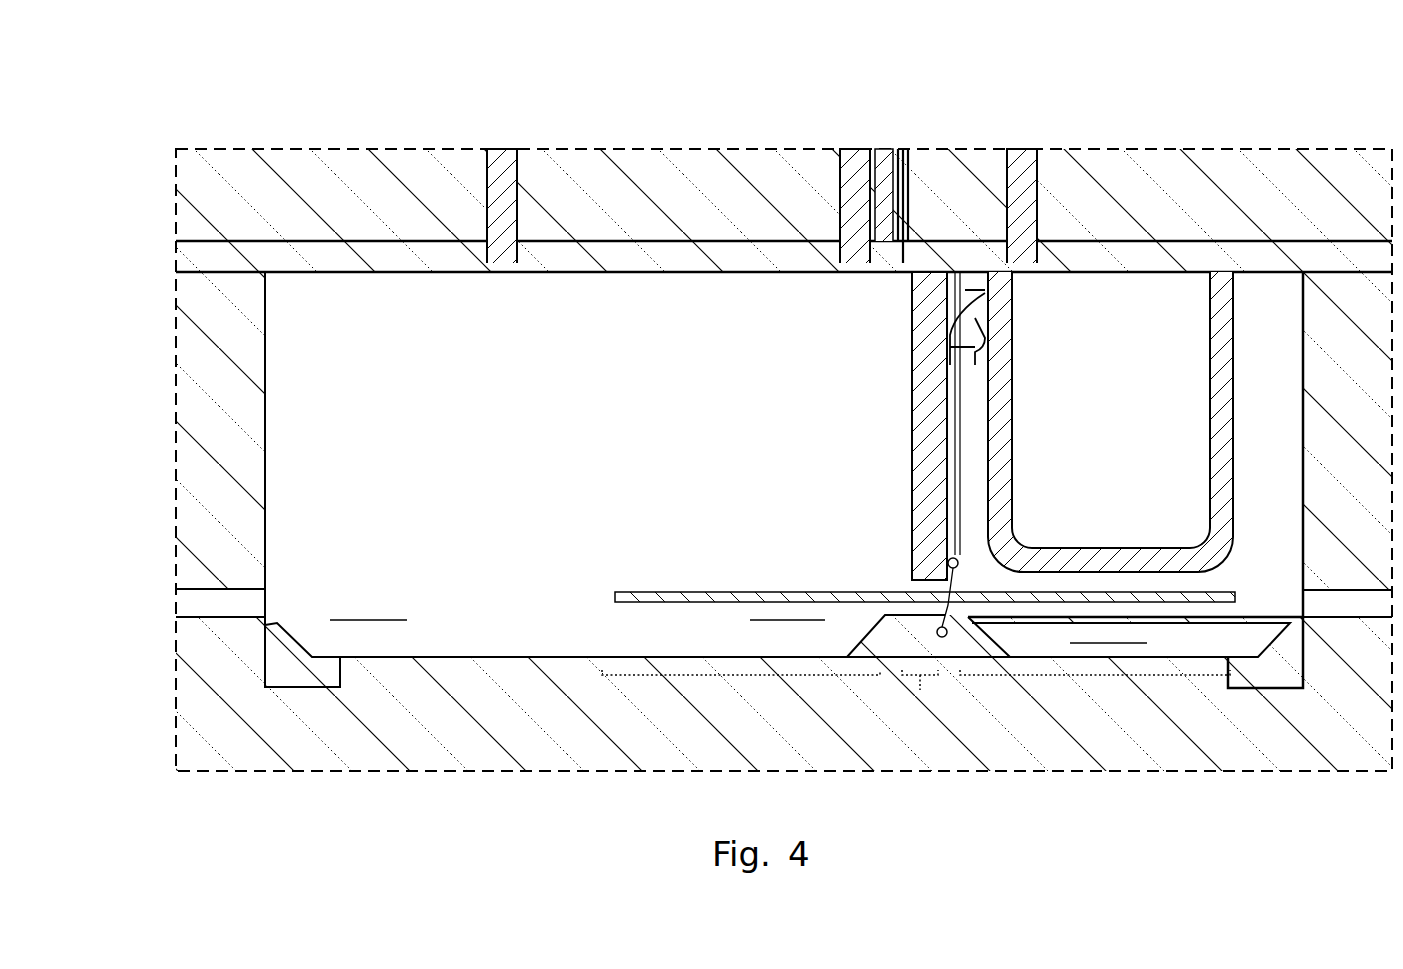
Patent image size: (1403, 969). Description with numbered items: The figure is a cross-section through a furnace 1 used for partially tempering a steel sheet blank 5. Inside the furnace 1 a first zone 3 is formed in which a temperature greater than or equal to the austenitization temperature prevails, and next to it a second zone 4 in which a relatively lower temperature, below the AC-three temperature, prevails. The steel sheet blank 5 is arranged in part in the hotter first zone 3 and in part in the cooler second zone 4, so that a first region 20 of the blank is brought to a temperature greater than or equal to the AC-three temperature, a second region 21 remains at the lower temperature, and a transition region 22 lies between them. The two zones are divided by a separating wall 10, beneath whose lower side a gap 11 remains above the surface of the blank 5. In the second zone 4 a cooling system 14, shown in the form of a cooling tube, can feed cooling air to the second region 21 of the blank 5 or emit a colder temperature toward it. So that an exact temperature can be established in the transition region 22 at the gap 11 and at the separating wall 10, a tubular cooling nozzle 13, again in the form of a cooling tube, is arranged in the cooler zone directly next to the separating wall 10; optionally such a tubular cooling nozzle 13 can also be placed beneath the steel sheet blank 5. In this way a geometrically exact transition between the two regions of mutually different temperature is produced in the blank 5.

The furnace 1 is at (230, 96).
The first zone 3 is at (381, 401).
The second zone 4 is at (1141, 368).
The steel sheet blank 5 is at (738, 598).
The separating wall 10 is at (918, 580).
The gap 11 is at (900, 583).
The tubular cooling nozzle 13 is at (960, 300).
The cooling system 14 is at (1100, 553).
The first region 20 is at (746, 675).
The second region 21 is at (1078, 675).
The transition region 22 is at (922, 678).